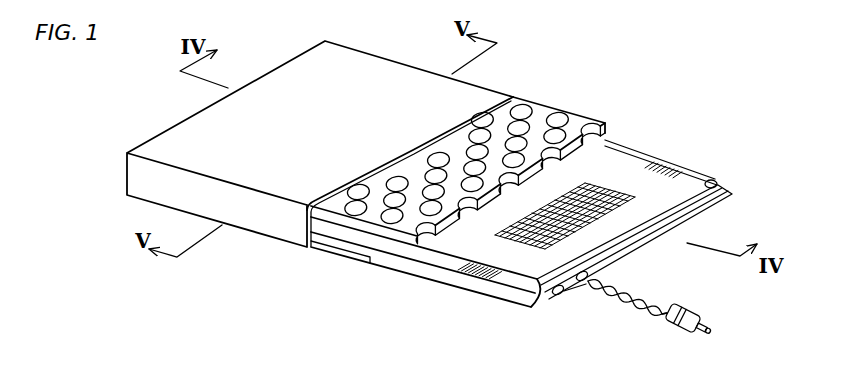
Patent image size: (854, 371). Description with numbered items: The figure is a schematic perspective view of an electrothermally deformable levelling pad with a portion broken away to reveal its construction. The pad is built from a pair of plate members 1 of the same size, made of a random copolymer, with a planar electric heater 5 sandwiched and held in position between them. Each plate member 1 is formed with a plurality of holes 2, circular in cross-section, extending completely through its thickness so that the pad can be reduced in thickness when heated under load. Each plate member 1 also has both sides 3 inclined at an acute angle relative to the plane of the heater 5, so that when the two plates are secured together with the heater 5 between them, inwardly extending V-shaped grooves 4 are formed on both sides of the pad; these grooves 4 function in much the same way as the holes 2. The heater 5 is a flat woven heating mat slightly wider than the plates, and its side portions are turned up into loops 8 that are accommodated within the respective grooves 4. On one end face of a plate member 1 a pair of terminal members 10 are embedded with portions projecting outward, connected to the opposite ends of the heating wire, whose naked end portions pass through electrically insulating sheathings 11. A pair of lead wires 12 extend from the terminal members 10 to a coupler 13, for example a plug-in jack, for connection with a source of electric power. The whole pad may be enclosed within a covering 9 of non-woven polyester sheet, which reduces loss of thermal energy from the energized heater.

The plate member 1 is at (542, 111).
The hole 2 is at (487, 104).
The side 3 is at (340, 215).
The V-shaped groove 4 is at (356, 242).
The planar electric heater 5 is at (604, 188).
The loop 8 is at (663, 162).
The covering 9 is at (414, 70).
The terminal member 10 is at (581, 280).
The electrically insulating sheathing 11 is at (676, 227).
The lead wire 12 is at (628, 314).
The coupler 13 is at (678, 330).